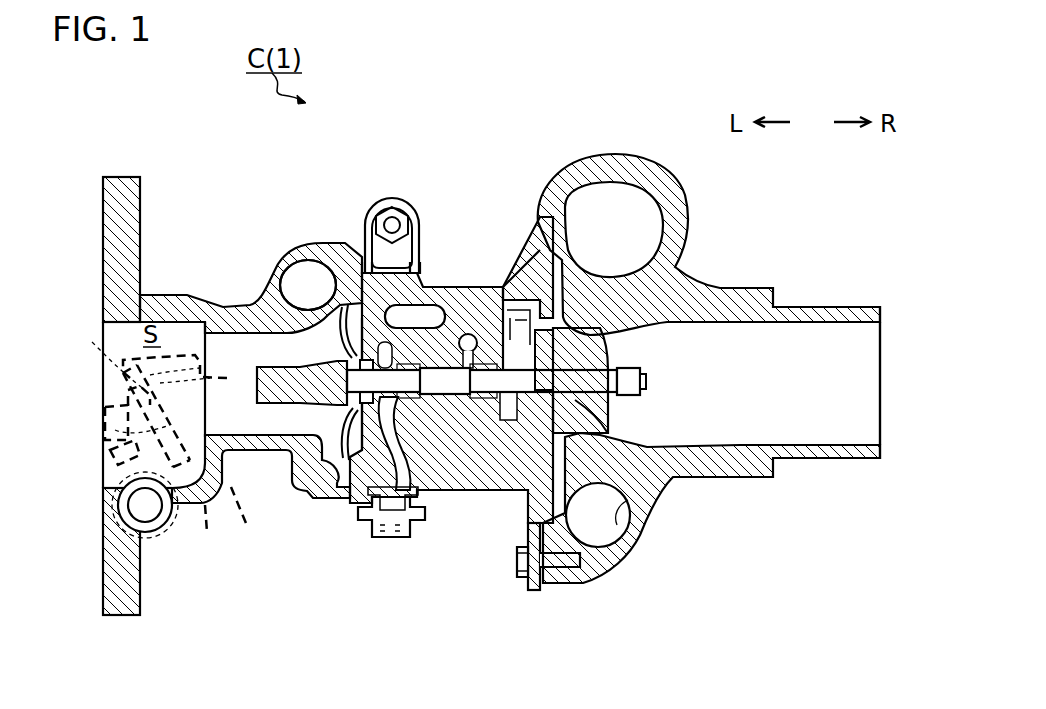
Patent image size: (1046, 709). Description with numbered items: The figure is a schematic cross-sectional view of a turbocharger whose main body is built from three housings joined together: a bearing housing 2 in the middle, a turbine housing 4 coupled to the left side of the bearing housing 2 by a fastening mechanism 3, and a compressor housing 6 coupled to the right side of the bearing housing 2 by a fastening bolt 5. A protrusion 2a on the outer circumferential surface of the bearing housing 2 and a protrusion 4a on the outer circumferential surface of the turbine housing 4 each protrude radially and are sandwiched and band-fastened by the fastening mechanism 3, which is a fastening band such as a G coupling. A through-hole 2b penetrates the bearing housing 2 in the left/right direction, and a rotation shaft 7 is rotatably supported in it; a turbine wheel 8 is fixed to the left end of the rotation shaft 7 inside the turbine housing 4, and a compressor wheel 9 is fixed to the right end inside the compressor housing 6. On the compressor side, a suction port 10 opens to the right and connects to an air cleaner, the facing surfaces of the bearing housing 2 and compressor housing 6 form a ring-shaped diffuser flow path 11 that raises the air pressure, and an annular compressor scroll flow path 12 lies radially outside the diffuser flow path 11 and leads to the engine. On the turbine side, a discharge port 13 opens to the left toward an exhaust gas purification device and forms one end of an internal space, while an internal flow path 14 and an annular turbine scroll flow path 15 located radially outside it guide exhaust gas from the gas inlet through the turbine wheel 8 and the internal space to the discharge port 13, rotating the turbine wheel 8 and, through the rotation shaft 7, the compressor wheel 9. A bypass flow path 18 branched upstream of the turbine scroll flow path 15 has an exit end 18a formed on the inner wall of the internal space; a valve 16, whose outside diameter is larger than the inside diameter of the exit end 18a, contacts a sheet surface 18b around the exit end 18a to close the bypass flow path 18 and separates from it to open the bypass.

The bearing housing 2 is at (465, 287).
The protrusion 2a is at (418, 265).
The through-hole 2b is at (387, 400).
The fastening mechanism 3 is at (392, 192).
The turbine housing 4 is at (176, 293).
The protrusion 4a is at (363, 265).
The fastening bolt 5 is at (518, 585).
The compressor housing 6 is at (620, 157).
The rotation shaft 7 is at (430, 403).
The turbine wheel 8 is at (102, 284).
The compressor wheel 9 is at (610, 413).
The suction port 10 is at (883, 413).
The diffuser flow path 11 is at (518, 270).
The compressor scroll flow path 12 is at (628, 500).
The discharge port 13 is at (103, 378).
The internal flow path 14 is at (330, 317).
The turbine scroll flow path 15 is at (303, 273).
The valve 16 is at (117, 491).
The bypass flow path 18 is at (143, 363).
The exit end 18a is at (107, 432).
The sheet surface 18b is at (130, 397).